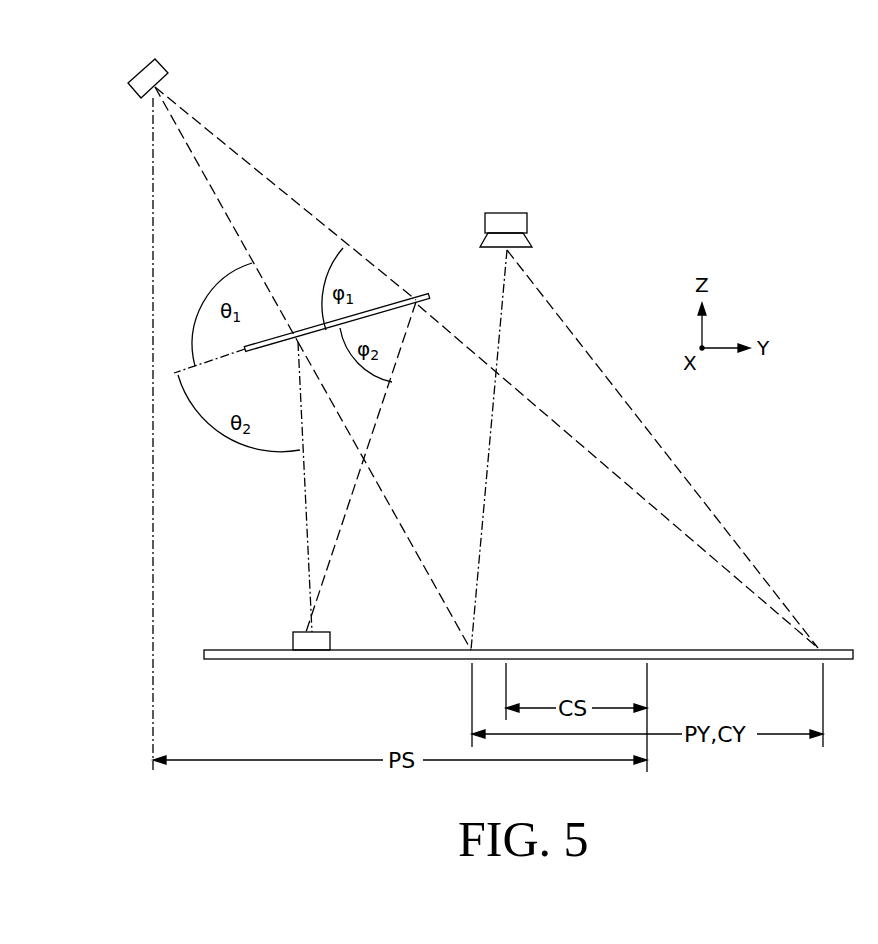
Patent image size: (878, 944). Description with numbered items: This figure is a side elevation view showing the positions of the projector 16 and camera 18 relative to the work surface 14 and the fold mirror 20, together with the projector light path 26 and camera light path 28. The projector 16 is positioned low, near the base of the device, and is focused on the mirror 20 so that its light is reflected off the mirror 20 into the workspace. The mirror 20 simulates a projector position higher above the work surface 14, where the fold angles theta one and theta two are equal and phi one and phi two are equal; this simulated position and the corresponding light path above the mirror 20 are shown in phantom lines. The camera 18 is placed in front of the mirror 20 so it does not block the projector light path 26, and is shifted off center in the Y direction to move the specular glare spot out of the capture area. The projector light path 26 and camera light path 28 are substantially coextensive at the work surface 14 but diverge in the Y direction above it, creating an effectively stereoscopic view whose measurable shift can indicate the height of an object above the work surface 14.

The work surface 14 is at (838, 648).
The projector 16 is at (295, 633).
The camera 18 is at (522, 224).
The fold mirror 20 is at (418, 293).
The projector light path 26 is at (455, 340).
The camera light path 28 is at (565, 318).